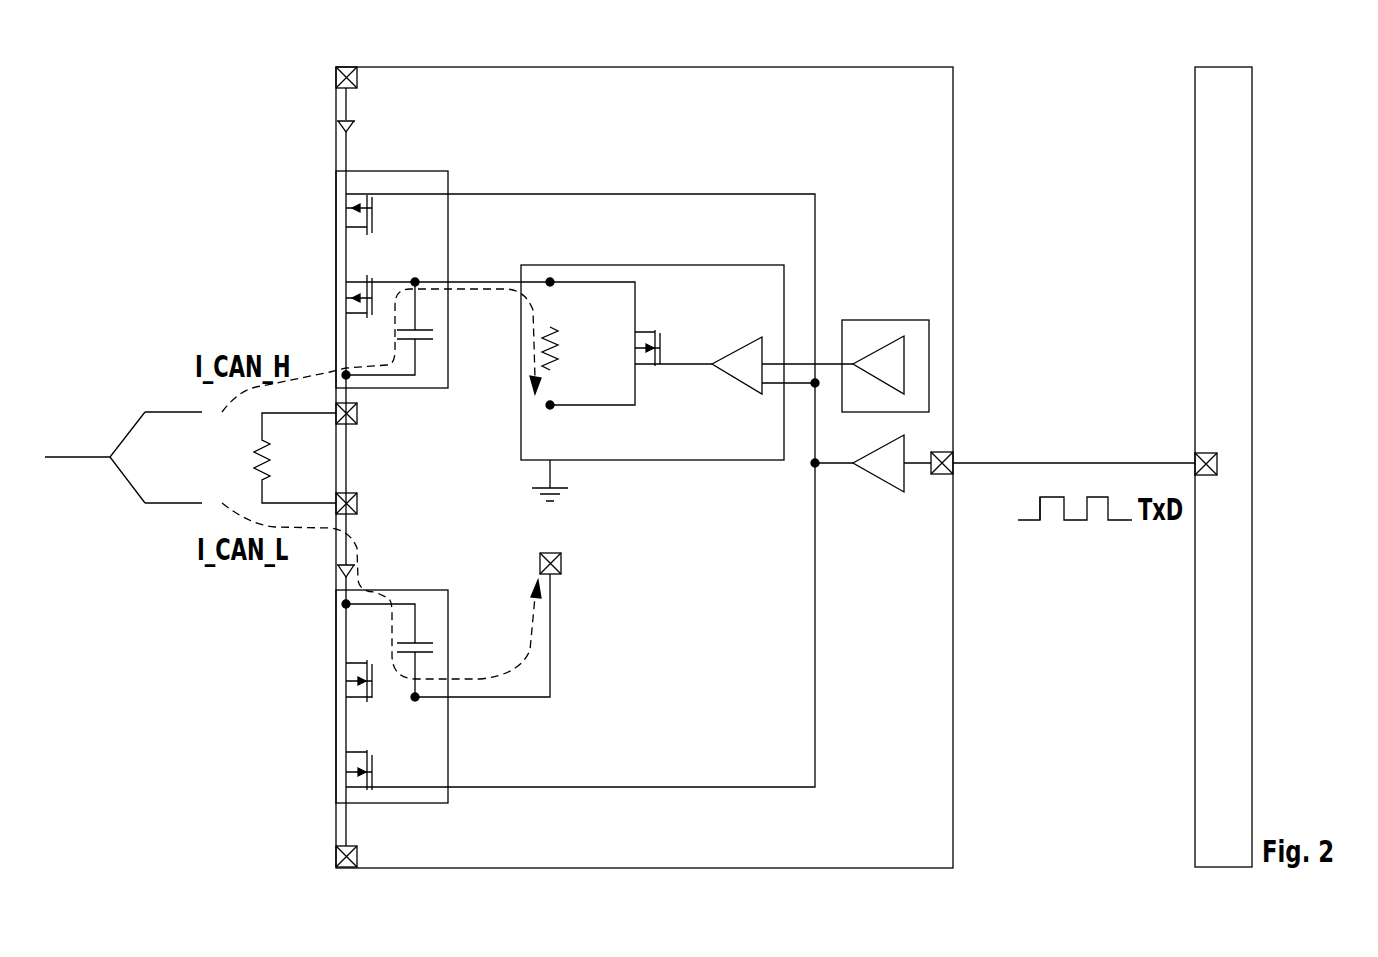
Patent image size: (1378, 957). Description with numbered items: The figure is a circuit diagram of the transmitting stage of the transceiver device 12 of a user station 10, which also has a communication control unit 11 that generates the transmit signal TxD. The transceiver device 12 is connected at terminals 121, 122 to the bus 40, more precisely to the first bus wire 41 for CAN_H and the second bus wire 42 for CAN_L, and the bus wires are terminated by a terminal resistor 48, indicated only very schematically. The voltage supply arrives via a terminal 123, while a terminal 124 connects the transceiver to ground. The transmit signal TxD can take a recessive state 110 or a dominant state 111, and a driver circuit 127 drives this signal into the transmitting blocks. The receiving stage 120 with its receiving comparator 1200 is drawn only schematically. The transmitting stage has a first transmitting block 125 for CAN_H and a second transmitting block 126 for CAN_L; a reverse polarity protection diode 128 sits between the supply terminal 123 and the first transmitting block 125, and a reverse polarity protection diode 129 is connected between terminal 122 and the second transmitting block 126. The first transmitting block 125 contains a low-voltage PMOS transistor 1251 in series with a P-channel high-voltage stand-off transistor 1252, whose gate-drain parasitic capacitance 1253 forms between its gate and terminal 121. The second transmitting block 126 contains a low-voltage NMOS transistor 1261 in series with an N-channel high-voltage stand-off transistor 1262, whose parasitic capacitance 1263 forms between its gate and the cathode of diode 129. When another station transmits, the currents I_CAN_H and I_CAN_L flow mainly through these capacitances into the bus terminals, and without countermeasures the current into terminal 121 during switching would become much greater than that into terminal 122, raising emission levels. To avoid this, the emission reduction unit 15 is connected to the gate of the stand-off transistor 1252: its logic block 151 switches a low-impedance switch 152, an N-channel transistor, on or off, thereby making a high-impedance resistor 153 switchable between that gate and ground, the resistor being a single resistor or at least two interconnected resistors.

The user station 10 is at (122, 85).
The communication control unit 11 is at (1195, 147).
The transceiver device 12 is at (953, 112).
The emission reduction unit 15 is at (690, 462).
The bus 40 is at (75, 460).
The first bus wire 41 is at (175, 411).
The second bus wire 42 is at (175, 505).
The terminal resistor 48 is at (260, 450).
The recessive state 110 is at (1030, 522).
The dominant state 111 is at (1038, 497).
The receiving stage 120 is at (853, 320).
The receiving comparator 1200 is at (895, 340).
The terminal 121 is at (357, 413).
The terminal 122 is at (357, 503).
The terminal 123 is at (357, 78).
The terminal 124 is at (357, 856).
The first transmitting block 125 is at (423, 171).
The second transmitting block 126 is at (423, 590).
The driver circuit 127 is at (866, 488).
The reverse polarity protection diode 128 is at (336, 127).
The reverse polarity protection diode 129 is at (340, 575).
The low-voltage PMOS transistor 1251 is at (346, 228).
The P-channel high-voltage stand-off transistor 1252 is at (350, 281).
The parasitic capacitance 1253 is at (433, 339).
The low-voltage NMOS transistor 1261 is at (346, 750).
The N-channel high-voltage stand-off transistor 1262 is at (346, 700).
The parasitic capacitance 1263 is at (433, 645).
The logic block 151 is at (735, 382).
The low-impedance switch 152 is at (662, 338).
The high-impedance resistor 153 is at (556, 349).